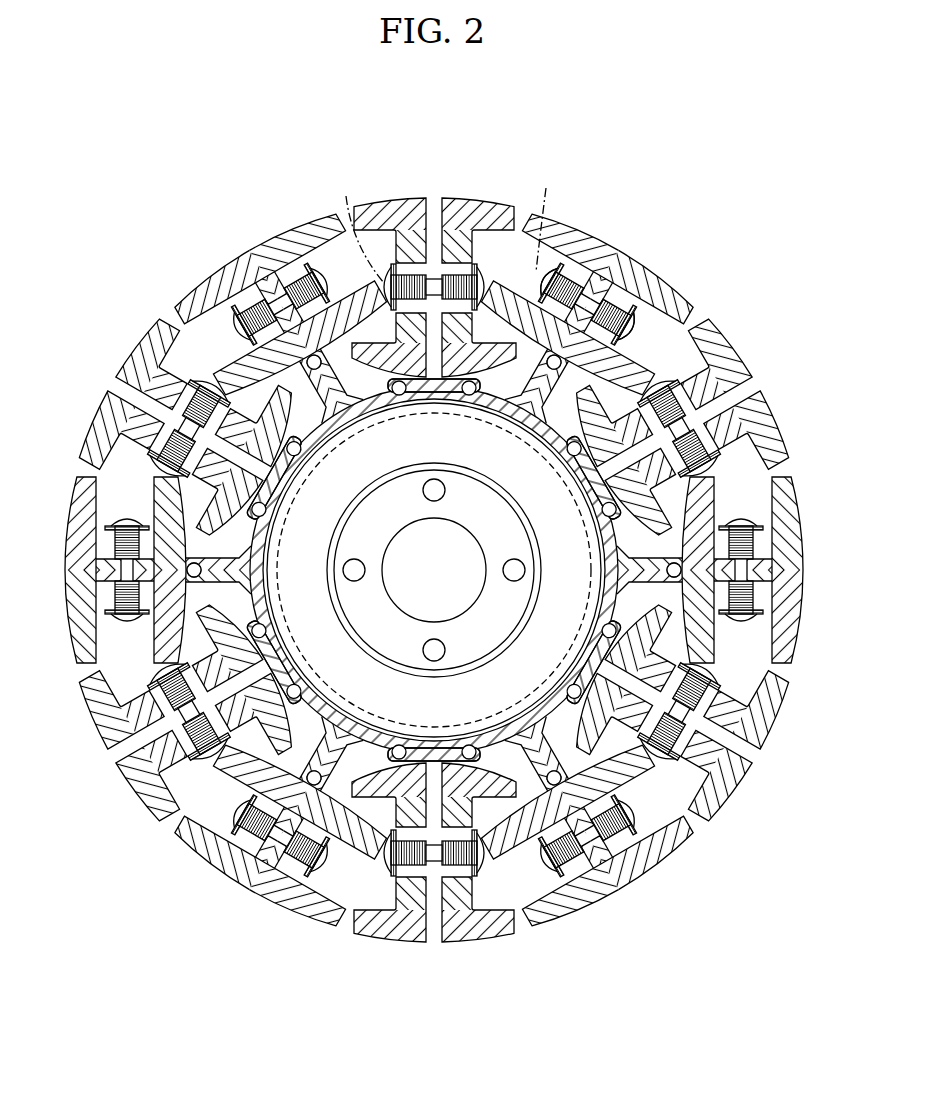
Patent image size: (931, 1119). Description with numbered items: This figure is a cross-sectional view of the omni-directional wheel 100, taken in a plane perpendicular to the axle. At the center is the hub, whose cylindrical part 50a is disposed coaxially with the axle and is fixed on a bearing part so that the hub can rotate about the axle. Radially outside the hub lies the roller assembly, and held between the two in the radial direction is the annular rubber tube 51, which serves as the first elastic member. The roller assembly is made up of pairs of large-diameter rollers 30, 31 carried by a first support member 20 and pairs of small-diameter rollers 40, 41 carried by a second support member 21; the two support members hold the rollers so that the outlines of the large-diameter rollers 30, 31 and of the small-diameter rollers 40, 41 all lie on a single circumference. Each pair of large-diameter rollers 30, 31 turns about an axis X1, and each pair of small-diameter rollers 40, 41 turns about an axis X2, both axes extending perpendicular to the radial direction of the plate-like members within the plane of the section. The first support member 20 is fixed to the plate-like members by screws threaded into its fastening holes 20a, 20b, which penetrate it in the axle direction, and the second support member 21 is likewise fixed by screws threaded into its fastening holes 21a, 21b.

The rotary electric machine 100 is at (703, 127).
The first support member 20 is at (434, 258).
The fastening hole 20a is at (400, 396).
The fastening hole 20b is at (468, 396).
The second support member 21 is at (264, 276).
The fastening hole 21a is at (548, 361).
The fastening hole 21b is at (632, 327).
The large-diameter roller 30 is at (386, 181).
The large-diameter roller 31 is at (471, 186).
The small-diameter roller 40 is at (578, 201).
The small-diameter roller 41 is at (673, 262).
The cylindrical part 50a is at (502, 667).
The annular rubber tube 51 is at (355, 667).
The axis of the large-diameter rollers X1 is at (356, 226).
The axis of the small-diameter rollers X2 is at (547, 215).